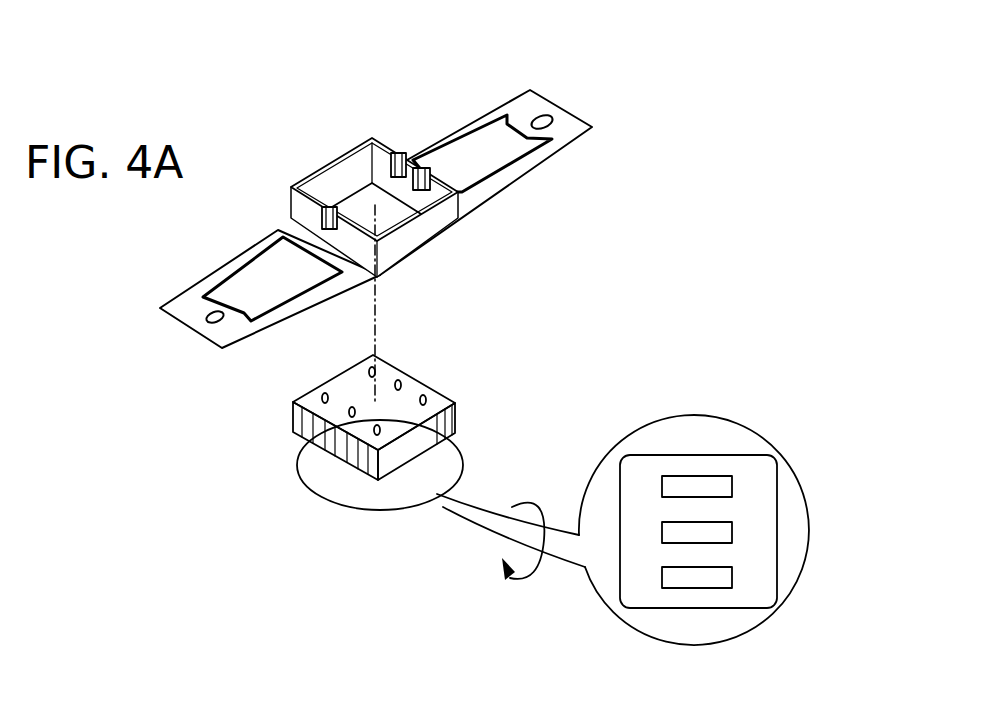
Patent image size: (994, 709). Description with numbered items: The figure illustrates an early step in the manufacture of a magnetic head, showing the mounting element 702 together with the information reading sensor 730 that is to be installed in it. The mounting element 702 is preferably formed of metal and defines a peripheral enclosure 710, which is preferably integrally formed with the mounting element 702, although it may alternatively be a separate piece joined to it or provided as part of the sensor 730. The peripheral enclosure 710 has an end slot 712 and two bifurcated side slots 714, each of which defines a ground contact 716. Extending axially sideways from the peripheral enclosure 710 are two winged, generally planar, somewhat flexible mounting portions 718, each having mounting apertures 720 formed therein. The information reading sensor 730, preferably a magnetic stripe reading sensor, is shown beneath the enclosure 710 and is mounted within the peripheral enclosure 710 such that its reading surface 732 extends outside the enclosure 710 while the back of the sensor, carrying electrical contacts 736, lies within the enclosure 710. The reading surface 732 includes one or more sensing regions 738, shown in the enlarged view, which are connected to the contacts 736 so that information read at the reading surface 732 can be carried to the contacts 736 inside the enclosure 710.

The mounting element 702 is at (345, 118).
The peripheral enclosure 710 is at (421, 215).
The end slot 712 is at (409, 228).
The bifurcated side slots 714 is at (338, 225).
The ground contact 716 is at (336, 242).
The mounting portions 718 is at (190, 305).
The mounting apertures 720 is at (210, 320).
The information reading sensor 730 is at (418, 415).
The reading surface 732 is at (714, 465).
The electrical contacts 736 is at (404, 384).
The sensing regions 738 is at (722, 578).